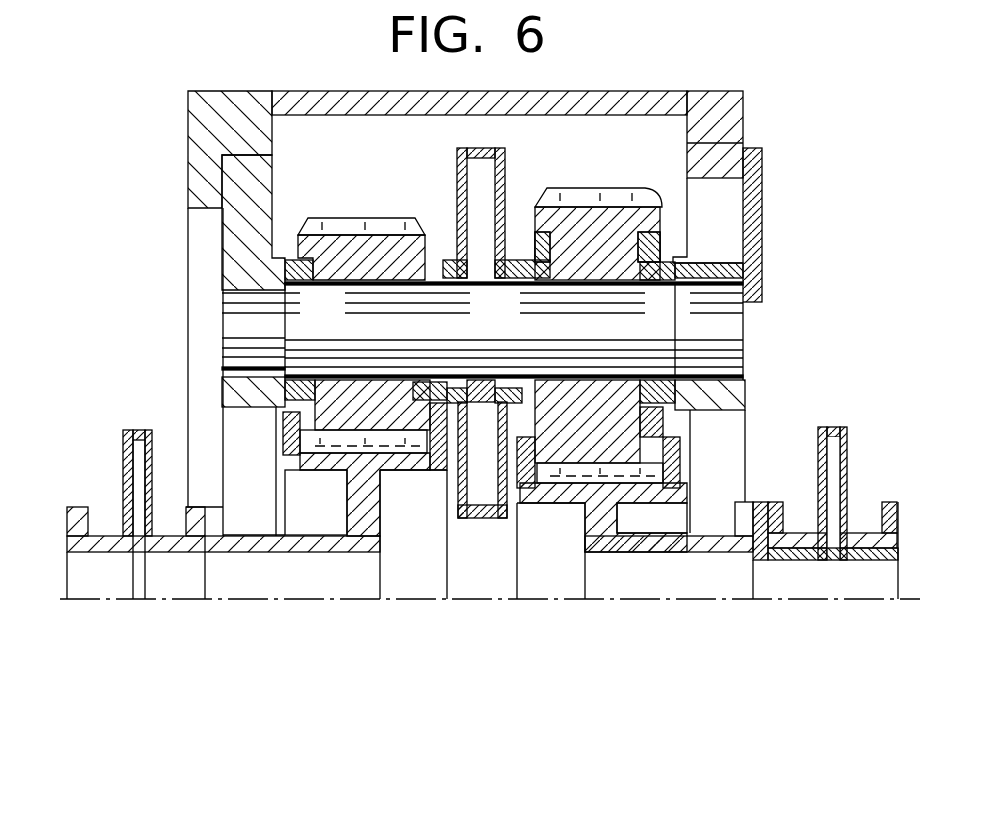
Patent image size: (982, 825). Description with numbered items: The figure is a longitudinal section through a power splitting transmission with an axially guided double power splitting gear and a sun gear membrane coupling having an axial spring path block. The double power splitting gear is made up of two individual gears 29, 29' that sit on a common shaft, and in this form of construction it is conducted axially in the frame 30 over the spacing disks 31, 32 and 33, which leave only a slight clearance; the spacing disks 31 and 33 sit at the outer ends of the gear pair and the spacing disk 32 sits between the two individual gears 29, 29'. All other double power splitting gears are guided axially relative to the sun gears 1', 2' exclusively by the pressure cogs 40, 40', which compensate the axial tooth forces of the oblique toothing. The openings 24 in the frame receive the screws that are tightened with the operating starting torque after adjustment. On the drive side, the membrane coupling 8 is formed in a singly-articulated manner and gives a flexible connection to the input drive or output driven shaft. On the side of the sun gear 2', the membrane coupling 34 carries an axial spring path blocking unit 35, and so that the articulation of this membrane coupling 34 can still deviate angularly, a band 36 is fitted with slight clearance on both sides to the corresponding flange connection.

The sun gear 1' is at (366, 489).
The sun gear 2' is at (602, 489).
The membrane coupling 8 is at (114, 438).
The opening 24 is at (728, 192).
The individual gear 29 is at (361, 232).
The individual gear 29' is at (598, 216).
The frame 30 is at (733, 384).
The spacing disk 31 is at (302, 287).
The spacing disk 32 is at (484, 285).
The spacing disk 33 is at (675, 300).
The membrane coupling 34 is at (863, 432).
The axial spring path blocking unit 35 is at (816, 560).
The band 36 is at (753, 552).
The pressure cog 40 is at (342, 455).
The pressure cog 40' is at (627, 487).